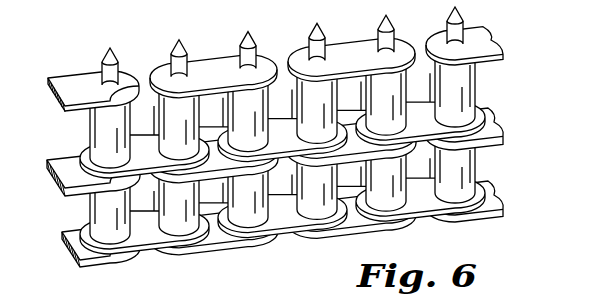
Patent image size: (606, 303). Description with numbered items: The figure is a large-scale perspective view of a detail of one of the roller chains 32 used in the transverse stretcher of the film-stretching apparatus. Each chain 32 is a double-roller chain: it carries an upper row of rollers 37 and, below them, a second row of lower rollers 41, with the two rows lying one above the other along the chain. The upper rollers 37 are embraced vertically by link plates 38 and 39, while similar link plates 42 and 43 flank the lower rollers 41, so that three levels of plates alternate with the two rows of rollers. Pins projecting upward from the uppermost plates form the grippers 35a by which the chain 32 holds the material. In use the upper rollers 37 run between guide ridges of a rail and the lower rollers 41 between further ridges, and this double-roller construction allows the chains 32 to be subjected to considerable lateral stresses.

The roller chain 32 is at (309, 149).
The grippers 35a is at (245, 38).
The upper roller 37 is at (95, 130).
The link plate 38 is at (142, 80).
The link plate 39 is at (288, 127).
The lower roller 41 is at (98, 212).
The link plate 42 is at (143, 190).
The link plate 43 is at (283, 215).